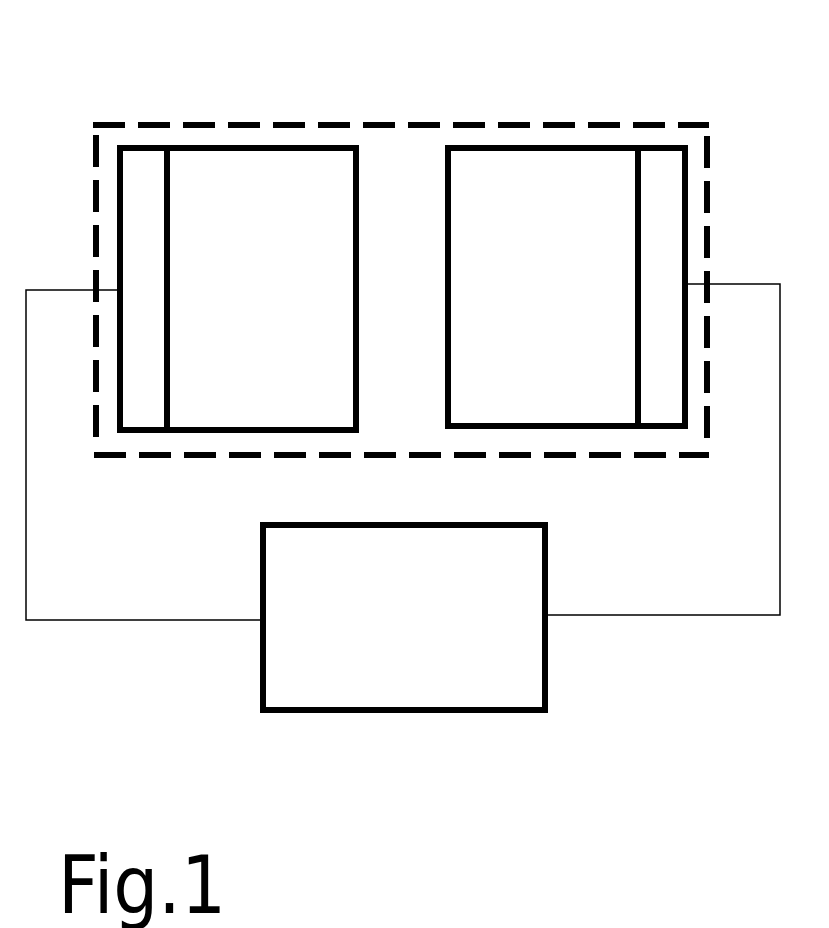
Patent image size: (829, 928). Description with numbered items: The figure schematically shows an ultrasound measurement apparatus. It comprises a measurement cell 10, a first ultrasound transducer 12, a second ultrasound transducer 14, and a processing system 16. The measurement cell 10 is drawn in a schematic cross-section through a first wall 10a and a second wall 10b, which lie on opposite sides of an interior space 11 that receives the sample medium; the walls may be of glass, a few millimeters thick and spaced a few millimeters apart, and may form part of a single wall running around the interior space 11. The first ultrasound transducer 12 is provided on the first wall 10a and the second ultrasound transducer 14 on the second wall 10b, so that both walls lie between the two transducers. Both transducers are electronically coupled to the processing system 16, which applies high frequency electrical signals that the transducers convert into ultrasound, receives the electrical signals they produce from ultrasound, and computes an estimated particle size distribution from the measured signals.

The measurement cell 10 is at (232, 124).
The first wall 10a is at (302, 145).
The second wall 10b is at (515, 145).
The interior space 11 is at (397, 200).
The first ultrasound transducer 12 is at (138, 145).
The second ultrasound transducer 14 is at (655, 145).
The processing system 16 is at (307, 713).